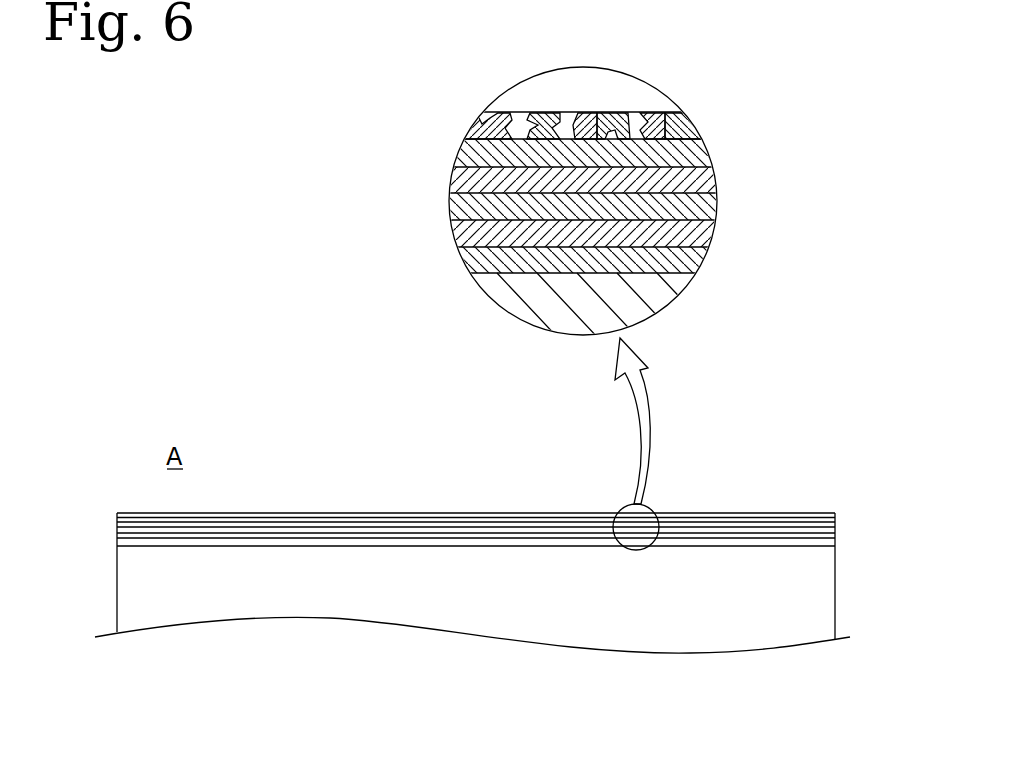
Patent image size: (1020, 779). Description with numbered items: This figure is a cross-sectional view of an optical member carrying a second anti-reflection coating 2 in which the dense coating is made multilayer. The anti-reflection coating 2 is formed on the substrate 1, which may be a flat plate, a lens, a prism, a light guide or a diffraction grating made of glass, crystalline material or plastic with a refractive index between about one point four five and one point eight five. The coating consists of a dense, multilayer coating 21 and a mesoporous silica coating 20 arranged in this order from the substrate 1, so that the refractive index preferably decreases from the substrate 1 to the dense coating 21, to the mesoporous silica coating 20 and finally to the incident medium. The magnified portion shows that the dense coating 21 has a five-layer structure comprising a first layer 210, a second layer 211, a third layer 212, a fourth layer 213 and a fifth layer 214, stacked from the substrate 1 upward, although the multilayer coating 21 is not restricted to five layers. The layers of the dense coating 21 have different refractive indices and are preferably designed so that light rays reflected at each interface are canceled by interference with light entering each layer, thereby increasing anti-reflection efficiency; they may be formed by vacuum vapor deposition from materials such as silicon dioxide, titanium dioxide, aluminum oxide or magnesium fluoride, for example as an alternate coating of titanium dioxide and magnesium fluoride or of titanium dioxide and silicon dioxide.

The substrate 1 is at (653, 300).
The anti-reflection coating 2 is at (506, 319).
The mesoporous silica coating 20 is at (673, 118).
The dense multilayer coating 21 is at (639, 213).
The first layer 210 is at (616, 267).
The second layer 211 is at (708, 232).
The third layer 212 is at (710, 205).
The fourth layer 213 is at (703, 178).
The fifth layer 214 is at (697, 150).